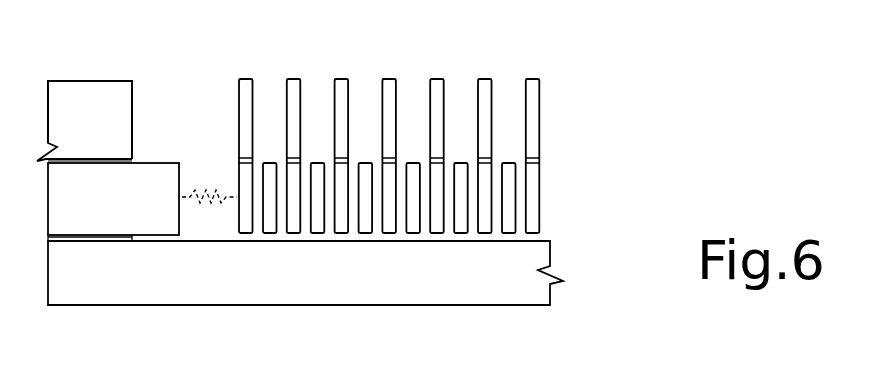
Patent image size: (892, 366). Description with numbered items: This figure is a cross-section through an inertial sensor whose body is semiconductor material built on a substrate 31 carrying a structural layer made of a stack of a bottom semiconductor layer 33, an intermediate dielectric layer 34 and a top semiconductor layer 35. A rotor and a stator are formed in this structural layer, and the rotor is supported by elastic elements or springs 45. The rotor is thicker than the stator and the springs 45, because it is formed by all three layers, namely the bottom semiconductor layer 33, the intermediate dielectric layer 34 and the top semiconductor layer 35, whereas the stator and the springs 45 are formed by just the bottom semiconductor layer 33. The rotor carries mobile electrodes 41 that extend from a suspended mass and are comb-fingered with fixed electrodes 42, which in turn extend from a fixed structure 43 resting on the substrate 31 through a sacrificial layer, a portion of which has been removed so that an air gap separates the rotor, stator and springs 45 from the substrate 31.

The substrate 31 is at (413, 298).
The bottom semiconductor layer 33 is at (90, 215).
The intermediate dielectric layer 34 is at (133, 158).
The top semiconductor layer 35 is at (57, 126).
The mobile electrodes 41 is at (242, 68).
The fixed electrodes 42 is at (413, 146).
The fixed structure 43 is at (98, 126).
The springs 45 is at (202, 187).